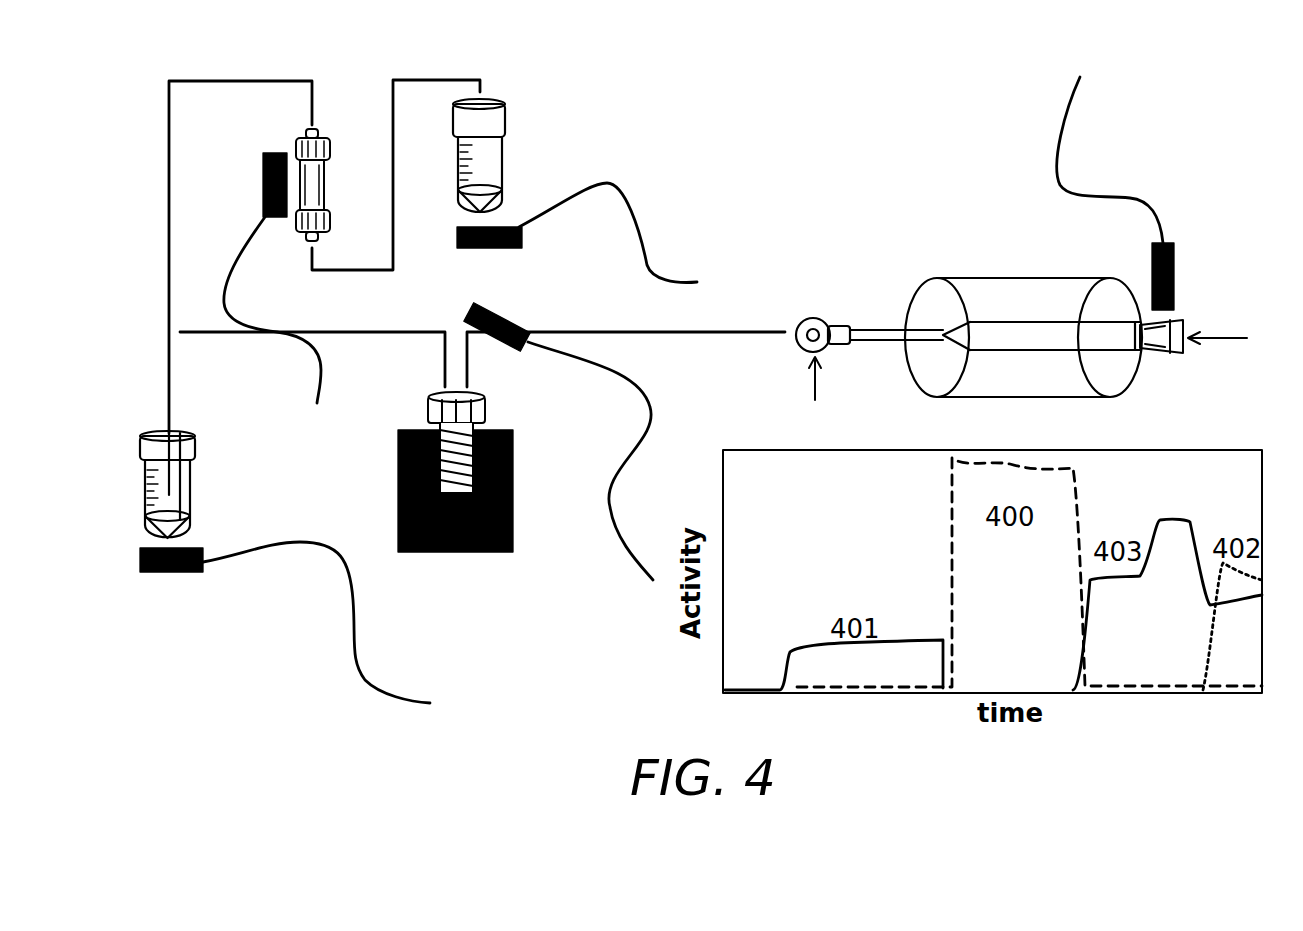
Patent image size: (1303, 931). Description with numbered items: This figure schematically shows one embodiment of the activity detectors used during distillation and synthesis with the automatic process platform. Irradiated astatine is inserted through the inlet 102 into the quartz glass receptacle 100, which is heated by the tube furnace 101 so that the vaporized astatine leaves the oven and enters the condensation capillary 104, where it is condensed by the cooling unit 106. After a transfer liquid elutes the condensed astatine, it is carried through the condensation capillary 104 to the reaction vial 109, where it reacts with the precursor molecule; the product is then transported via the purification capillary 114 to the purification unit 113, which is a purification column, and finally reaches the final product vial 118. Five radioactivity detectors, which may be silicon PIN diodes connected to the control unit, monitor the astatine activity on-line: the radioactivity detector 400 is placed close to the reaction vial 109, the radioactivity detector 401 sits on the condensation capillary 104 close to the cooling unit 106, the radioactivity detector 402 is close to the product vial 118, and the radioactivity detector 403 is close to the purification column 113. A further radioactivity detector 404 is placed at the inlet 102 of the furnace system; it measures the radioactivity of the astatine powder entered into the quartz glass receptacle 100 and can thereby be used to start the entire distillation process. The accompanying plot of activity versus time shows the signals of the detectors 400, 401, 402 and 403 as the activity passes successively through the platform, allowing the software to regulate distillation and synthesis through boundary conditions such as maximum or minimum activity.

The quartz glass receptacle 100 is at (968, 359).
The tube furnace 101 is at (1023, 323).
The inlet 102 is at (1193, 357).
The condensation capillary 104 is at (482, 343).
The cooling unit 106 is at (455, 472).
The reaction vial 109 is at (194, 484).
The purification unit 113 is at (341, 185).
The purification capillary 114 is at (324, 256).
The final product vial 118 is at (508, 155).
The radioactivity detector 400 is at (285, 622).
The radioactivity detector 401 is at (558, 437).
The radioactivity detector 402 is at (577, 232).
The radioactivity detector 403 is at (267, 278).
The radioactivity detector 404 is at (1147, 193).